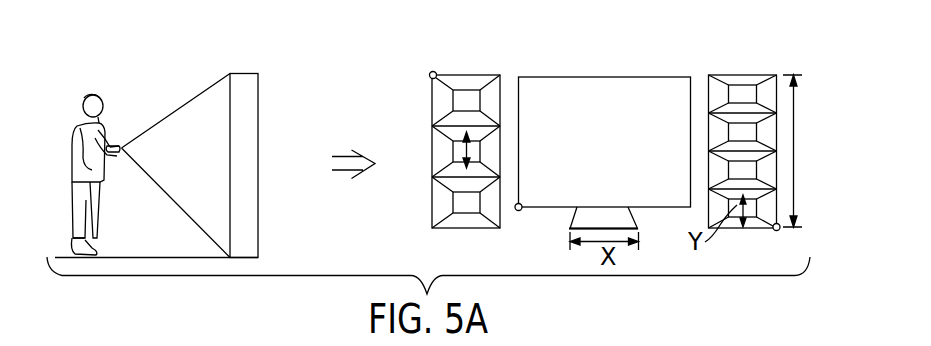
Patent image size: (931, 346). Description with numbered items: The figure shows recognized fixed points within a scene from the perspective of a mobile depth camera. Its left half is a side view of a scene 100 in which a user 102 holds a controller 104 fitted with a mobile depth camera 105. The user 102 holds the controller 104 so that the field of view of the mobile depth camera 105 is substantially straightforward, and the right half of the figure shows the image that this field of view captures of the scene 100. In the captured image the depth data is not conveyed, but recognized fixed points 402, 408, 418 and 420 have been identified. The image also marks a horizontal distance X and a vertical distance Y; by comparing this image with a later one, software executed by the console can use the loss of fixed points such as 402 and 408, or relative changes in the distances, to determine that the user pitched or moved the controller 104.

The scene 100 is at (172, 74).
The user 102 is at (93, 95).
The controller 104 is at (120, 146).
The mobile depth camera 105 is at (122, 152).
The recognized fixed point 402 is at (434, 72).
The recognized fixed point 408 is at (638, 77).
The recognized fixed point 418 is at (520, 210).
The recognized fixed point 420 is at (780, 229).